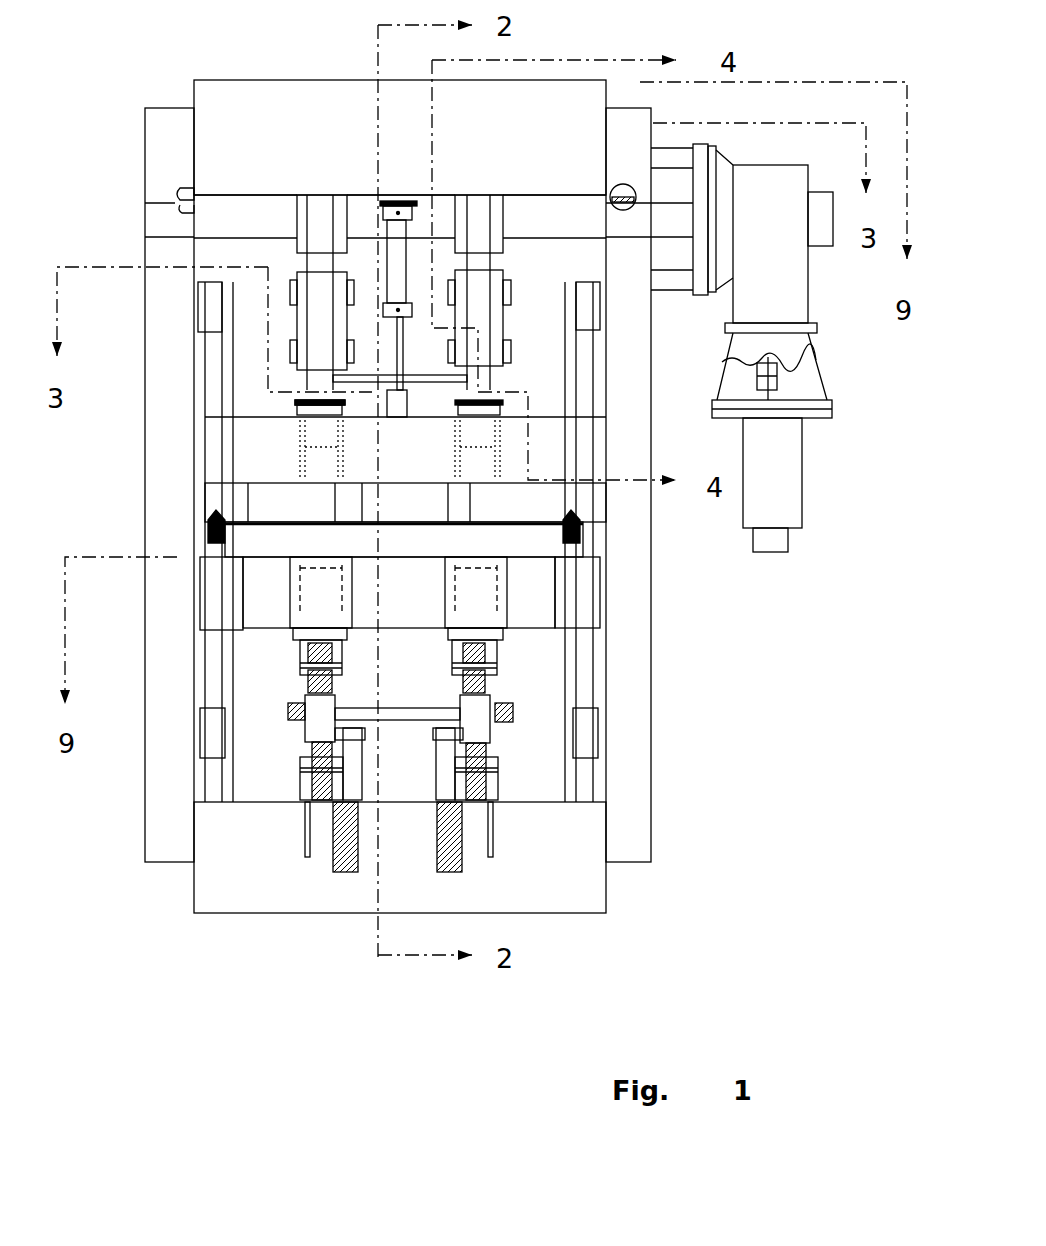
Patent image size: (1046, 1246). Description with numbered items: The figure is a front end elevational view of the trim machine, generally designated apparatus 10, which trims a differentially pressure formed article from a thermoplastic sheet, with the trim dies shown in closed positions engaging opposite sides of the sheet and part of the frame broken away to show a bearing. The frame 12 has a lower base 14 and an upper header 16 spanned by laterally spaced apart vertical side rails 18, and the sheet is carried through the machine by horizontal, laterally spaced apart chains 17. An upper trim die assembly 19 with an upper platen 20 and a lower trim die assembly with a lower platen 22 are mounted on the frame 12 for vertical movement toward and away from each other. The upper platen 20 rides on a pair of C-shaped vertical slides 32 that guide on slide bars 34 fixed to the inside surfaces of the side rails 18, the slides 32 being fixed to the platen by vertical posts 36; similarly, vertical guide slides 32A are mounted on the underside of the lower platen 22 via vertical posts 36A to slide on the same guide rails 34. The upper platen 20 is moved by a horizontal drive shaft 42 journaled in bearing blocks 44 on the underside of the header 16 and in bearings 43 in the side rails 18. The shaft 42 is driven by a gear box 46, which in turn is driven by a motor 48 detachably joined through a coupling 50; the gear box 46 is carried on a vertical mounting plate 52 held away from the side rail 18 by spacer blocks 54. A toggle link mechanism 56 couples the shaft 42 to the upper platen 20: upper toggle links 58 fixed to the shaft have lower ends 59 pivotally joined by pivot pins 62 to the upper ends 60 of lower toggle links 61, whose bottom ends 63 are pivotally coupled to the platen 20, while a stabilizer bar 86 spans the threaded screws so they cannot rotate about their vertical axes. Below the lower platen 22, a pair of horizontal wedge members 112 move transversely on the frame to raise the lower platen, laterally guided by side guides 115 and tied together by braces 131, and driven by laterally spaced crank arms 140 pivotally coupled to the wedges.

The apparatus 10 is at (175, 75).
The frame 12 is at (198, 167).
The lower base 14 is at (307, 887).
The upper header 16 is at (322, 90).
The chains 17 is at (208, 538).
The vertical side rails 18 is at (165, 357).
The upper trim die assembly 19 is at (162, 427).
The upper platen 20 is at (593, 450).
The lower platen 22 is at (600, 597).
The slides 32 is at (590, 303).
The slides 32A is at (592, 740).
The slide bars 34 is at (603, 377).
The vertical posts 36 is at (573, 467).
The vertical posts 36A is at (570, 677).
The horizontal drive shaft 42 is at (248, 218).
The bearings 43 is at (628, 195).
The bearing blocks 44 is at (340, 220).
The gear box 46 is at (808, 295).
The motor 48 is at (778, 462).
The coupling 50 is at (822, 378).
The vertical mounting plate 52 is at (703, 147).
The spacer blocks 54 is at (675, 145).
The toggle link mechanism 56 is at (490, 175).
The upper toggle links 58 is at (480, 233).
The lower ends 59 is at (317, 273).
The upper ends 60 is at (503, 268).
The lower toggle links 61 is at (495, 297).
The pivot pins 62 is at (287, 295).
The bottom ends 63 is at (497, 370).
The stabilizer bar 86 is at (387, 383).
The wedge members 112 is at (322, 723).
The side guides 115 is at (430, 765).
The braces 131 is at (398, 673).
The crank arms 140 is at (288, 708).